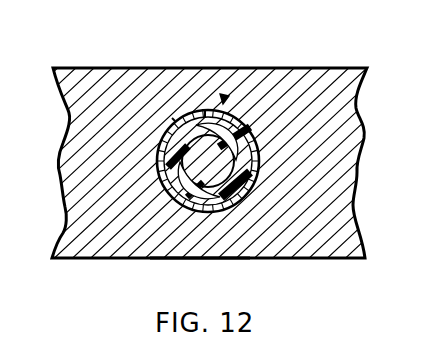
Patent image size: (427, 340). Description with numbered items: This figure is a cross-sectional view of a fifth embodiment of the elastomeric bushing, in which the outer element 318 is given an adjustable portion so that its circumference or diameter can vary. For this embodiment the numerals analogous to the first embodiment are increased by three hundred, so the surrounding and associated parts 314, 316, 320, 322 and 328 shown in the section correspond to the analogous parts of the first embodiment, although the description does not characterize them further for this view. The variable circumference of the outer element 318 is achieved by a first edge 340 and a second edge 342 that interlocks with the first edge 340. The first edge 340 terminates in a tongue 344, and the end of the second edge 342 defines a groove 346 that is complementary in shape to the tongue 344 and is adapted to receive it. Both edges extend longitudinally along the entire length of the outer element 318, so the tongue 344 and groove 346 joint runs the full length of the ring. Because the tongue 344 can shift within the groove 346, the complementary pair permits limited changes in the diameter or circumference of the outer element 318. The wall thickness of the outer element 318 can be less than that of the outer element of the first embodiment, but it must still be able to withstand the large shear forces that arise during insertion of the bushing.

The housing block 314 is at (318, 103).
The lower surface of housing 316 is at (202, 211).
The outer element 318 is at (165, 178).
The upper surface of housing 320 is at (173, 117).
The annular ring 322 is at (250, 150).
The seal element 328 is at (222, 102).
The first edge 340 is at (205, 110).
The second edge 342 is at (200, 110).
The tongue 344 is at (205, 110).
The groove 346 is at (234, 99).